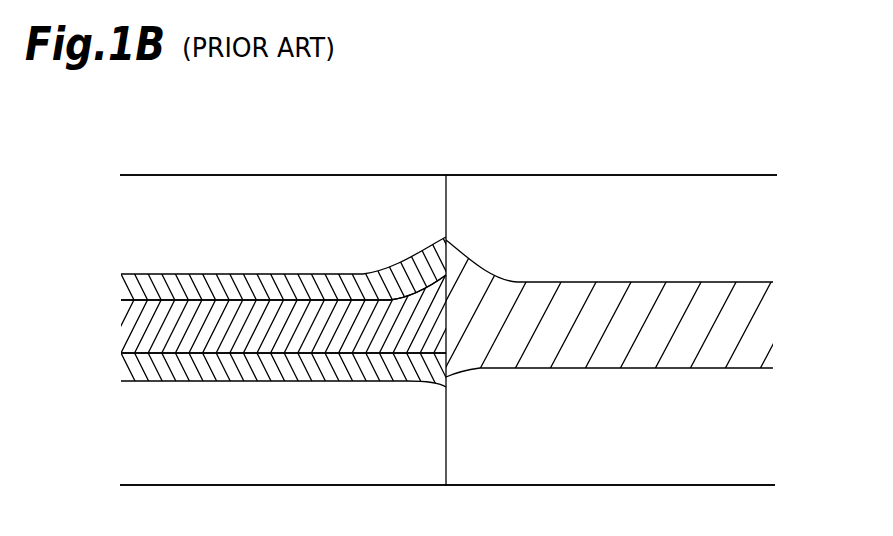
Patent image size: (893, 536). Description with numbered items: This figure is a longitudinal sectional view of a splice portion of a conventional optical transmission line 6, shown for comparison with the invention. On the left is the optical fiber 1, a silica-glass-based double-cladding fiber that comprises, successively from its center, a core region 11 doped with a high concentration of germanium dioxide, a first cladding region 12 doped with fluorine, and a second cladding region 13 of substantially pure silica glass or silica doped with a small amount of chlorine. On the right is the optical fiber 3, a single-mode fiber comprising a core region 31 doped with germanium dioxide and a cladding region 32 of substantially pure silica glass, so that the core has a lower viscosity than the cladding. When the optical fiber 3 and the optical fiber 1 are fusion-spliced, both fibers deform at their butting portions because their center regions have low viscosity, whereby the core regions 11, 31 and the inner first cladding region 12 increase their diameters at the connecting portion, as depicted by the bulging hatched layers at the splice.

The optical fiber 1 is at (260, 173).
The optical fiber 3 is at (594, 173).
The optical transmission line 6 is at (453, 133).
The core region 11 is at (153, 334).
The first cladding region 12 is at (152, 291).
The second cladding region 13 is at (158, 224).
The core region 31 is at (753, 320).
The cladding region 32 is at (752, 213).